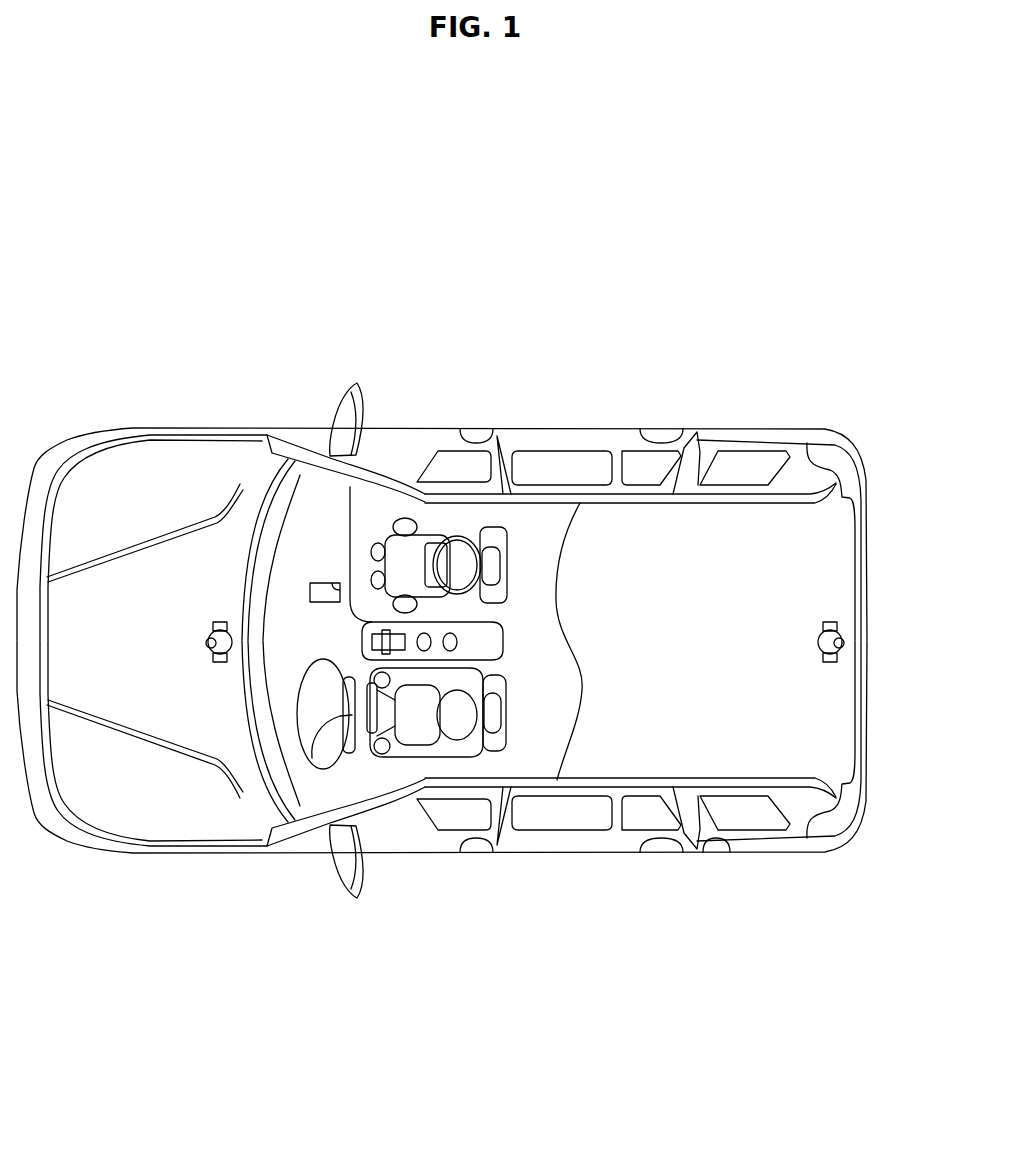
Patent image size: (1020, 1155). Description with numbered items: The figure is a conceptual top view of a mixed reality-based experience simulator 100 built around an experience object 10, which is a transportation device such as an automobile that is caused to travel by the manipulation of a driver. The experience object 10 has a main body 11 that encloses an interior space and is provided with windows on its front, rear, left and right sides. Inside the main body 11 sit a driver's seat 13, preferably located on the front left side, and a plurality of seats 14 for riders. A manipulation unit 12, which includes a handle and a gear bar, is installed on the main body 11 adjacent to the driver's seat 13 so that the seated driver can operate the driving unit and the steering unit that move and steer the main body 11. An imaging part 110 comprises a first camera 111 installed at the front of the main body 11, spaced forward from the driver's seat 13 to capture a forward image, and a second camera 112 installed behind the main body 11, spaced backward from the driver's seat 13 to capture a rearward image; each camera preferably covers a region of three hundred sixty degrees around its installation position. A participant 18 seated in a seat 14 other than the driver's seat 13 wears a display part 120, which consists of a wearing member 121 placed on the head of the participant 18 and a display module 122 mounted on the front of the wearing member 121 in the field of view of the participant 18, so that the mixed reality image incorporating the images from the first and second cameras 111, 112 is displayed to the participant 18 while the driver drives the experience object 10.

The mixed reality-based experience simulator 100 is at (472, 218).
The experience object 10 is at (95, 373).
The main body 11 is at (207, 557).
The manipulation unit 12 is at (330, 770).
The driver's seat 13 is at (490, 733).
The seat 14 is at (498, 558).
The participant 18 is at (410, 548).
The imaging part 110 is at (185, 661).
The first camera 111 is at (213, 657).
The second camera 112 is at (840, 643).
The display part 120 is at (457, 505).
The wearing member 121 is at (482, 527).
The display module 122 is at (436, 546).